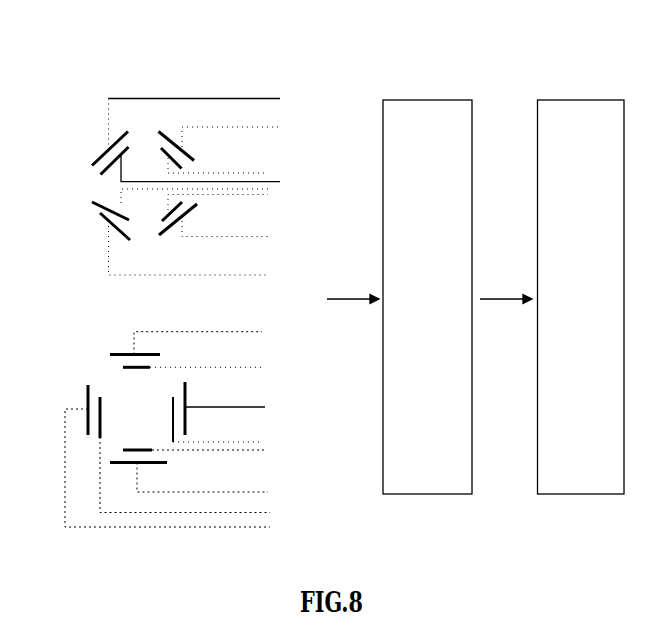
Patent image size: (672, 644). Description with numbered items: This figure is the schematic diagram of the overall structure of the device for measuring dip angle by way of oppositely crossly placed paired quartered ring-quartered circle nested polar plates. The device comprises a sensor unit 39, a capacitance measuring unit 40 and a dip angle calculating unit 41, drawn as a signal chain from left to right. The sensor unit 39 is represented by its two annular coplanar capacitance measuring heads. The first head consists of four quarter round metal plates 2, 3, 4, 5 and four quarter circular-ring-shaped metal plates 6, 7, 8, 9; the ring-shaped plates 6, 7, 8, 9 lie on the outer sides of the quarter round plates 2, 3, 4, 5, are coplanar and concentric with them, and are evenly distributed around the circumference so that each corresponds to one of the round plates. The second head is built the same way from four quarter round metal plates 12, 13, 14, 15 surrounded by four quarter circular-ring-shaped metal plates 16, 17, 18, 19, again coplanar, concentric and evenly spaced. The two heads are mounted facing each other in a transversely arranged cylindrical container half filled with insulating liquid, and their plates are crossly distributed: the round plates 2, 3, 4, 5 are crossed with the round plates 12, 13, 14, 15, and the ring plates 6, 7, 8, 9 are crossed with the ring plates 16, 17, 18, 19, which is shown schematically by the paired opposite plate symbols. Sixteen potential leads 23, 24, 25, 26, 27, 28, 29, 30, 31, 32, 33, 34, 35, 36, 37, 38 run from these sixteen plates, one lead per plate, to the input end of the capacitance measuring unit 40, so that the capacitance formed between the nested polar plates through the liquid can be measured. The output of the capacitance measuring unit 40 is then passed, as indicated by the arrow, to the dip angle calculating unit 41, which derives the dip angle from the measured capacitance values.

The quarter round metal plate 2 is at (165, 152).
The quarter round metal plate 3 is at (104, 167).
The quarter round metal plate 4 is at (106, 208).
The quarter round metal plate 5 is at (165, 212).
The quarter circular-ring-shaped metal plate 6 is at (168, 137).
The quarter circular-ring-shaped metal plate 7 is at (107, 150).
The quarter circular-ring-shaped metal plate 8 is at (106, 219).
The quarter circular-ring-shaped metal plate 9 is at (165, 238).
The quarter round metal plate 12 is at (122, 367).
The quarter round metal plate 13 is at (101, 407).
The quarter round metal plate 14 is at (122, 450).
The quarter round metal plate 15 is at (171, 403).
The quarter circular-ring-shaped metal plate 16 is at (118, 353).
The quarter circular-ring-shaped metal plate 17 is at (88, 397).
The quarter circular-ring-shaped metal plate 18 is at (167, 462).
The quarter circular-ring-shaped metal plate 19 is at (187, 400).
The potential lead 23 is at (268, 173).
The potential lead 24 is at (280, 182).
The potential lead 25 is at (268, 189).
The potential lead 26 is at (268, 194).
The potential lead 27 is at (282, 127).
The potential lead 28 is at (280, 98).
The potential lead 29 is at (268, 275).
The potential lead 30 is at (270, 236).
The potential lead 31 is at (262, 367).
The potential lead 32 is at (270, 512).
The potential lead 33 is at (267, 450).
The potential lead 34 is at (263, 442).
The potential lead 35 is at (262, 332).
The potential lead 36 is at (270, 527).
The potential lead 37 is at (268, 492).
The potential lead 38 is at (265, 407).
The sensor unit 39 is at (187, 92).
The capacitance measuring unit 40 is at (420, 100).
The dip angle calculating unit 41 is at (570, 100).